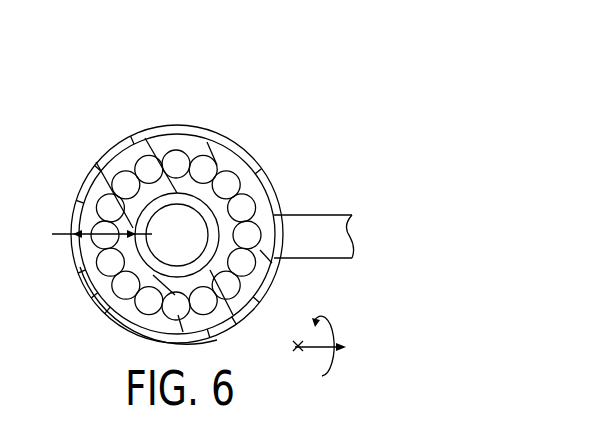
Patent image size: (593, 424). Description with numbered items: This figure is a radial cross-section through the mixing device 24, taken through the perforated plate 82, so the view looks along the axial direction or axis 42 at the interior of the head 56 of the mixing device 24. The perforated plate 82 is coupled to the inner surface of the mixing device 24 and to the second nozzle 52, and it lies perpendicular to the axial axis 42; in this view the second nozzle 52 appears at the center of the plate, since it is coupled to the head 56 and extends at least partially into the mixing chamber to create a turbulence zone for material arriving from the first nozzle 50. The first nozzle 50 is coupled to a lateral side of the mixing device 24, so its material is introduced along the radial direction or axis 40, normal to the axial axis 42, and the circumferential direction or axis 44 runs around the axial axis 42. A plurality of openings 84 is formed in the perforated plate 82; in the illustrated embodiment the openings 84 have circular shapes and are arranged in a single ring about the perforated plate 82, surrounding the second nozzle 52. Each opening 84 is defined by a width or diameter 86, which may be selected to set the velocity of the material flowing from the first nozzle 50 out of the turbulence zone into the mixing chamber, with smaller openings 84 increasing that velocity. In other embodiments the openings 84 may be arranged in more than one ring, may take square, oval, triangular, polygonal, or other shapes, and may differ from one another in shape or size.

The mixing device 24 is at (222, 80).
The head 56 is at (143, 130).
The perforated plate 82 is at (227, 160).
The openings 84 is at (255, 181).
The second nozzle 52 is at (158, 296).
The width or diameter 86 is at (72, 243).
The first nozzle 50 is at (315, 213).
The circumferential direction or axis 44 is at (334, 314).
The radial direction or axis 40 is at (332, 357).
The axial direction or axis 42 is at (296, 352).